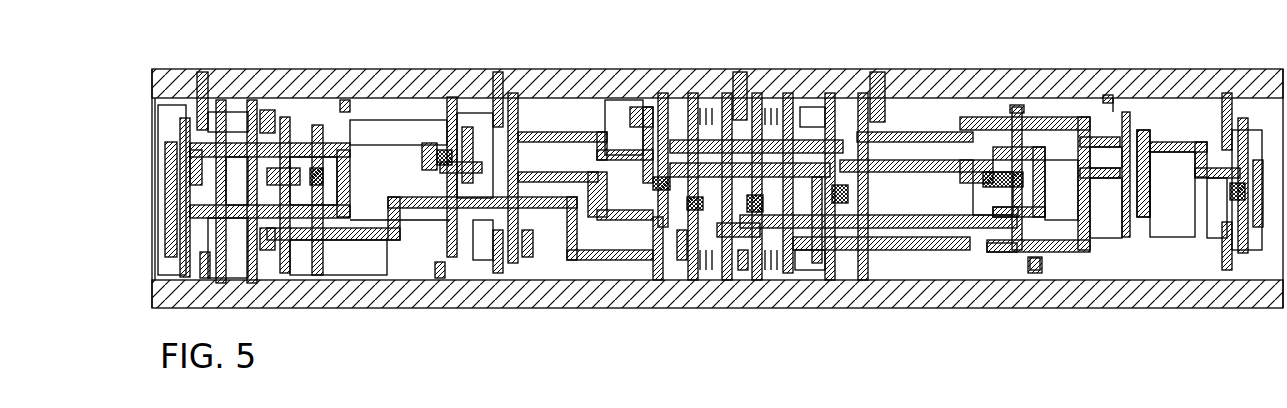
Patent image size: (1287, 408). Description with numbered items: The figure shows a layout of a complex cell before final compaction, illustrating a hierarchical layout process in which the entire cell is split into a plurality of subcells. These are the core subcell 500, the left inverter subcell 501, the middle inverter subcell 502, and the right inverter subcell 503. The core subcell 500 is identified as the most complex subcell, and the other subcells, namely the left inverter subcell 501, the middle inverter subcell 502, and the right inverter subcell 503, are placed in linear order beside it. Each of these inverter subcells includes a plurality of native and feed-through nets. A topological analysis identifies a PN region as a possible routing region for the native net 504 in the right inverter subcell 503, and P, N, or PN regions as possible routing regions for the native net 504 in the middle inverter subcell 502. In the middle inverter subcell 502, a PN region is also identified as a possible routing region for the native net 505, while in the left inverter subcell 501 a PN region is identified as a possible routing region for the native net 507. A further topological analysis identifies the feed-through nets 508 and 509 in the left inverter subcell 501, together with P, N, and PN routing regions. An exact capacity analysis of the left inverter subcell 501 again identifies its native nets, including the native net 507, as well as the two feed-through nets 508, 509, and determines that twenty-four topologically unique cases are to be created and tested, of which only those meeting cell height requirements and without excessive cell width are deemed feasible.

The core subcell 500 is at (600, 69).
The left inverter subcell 501 is at (907, 322).
The middle inverter subcell 502 is at (1055, 322).
The right inverter subcell 503 is at (1161, 322).
The native net 504 is at (1168, 147).
The native net 505 is at (997, 225).
The native net 507 is at (988, 173).
The feed-through net 508 is at (1040, 117).
The feed-through net 509 is at (1007, 252).